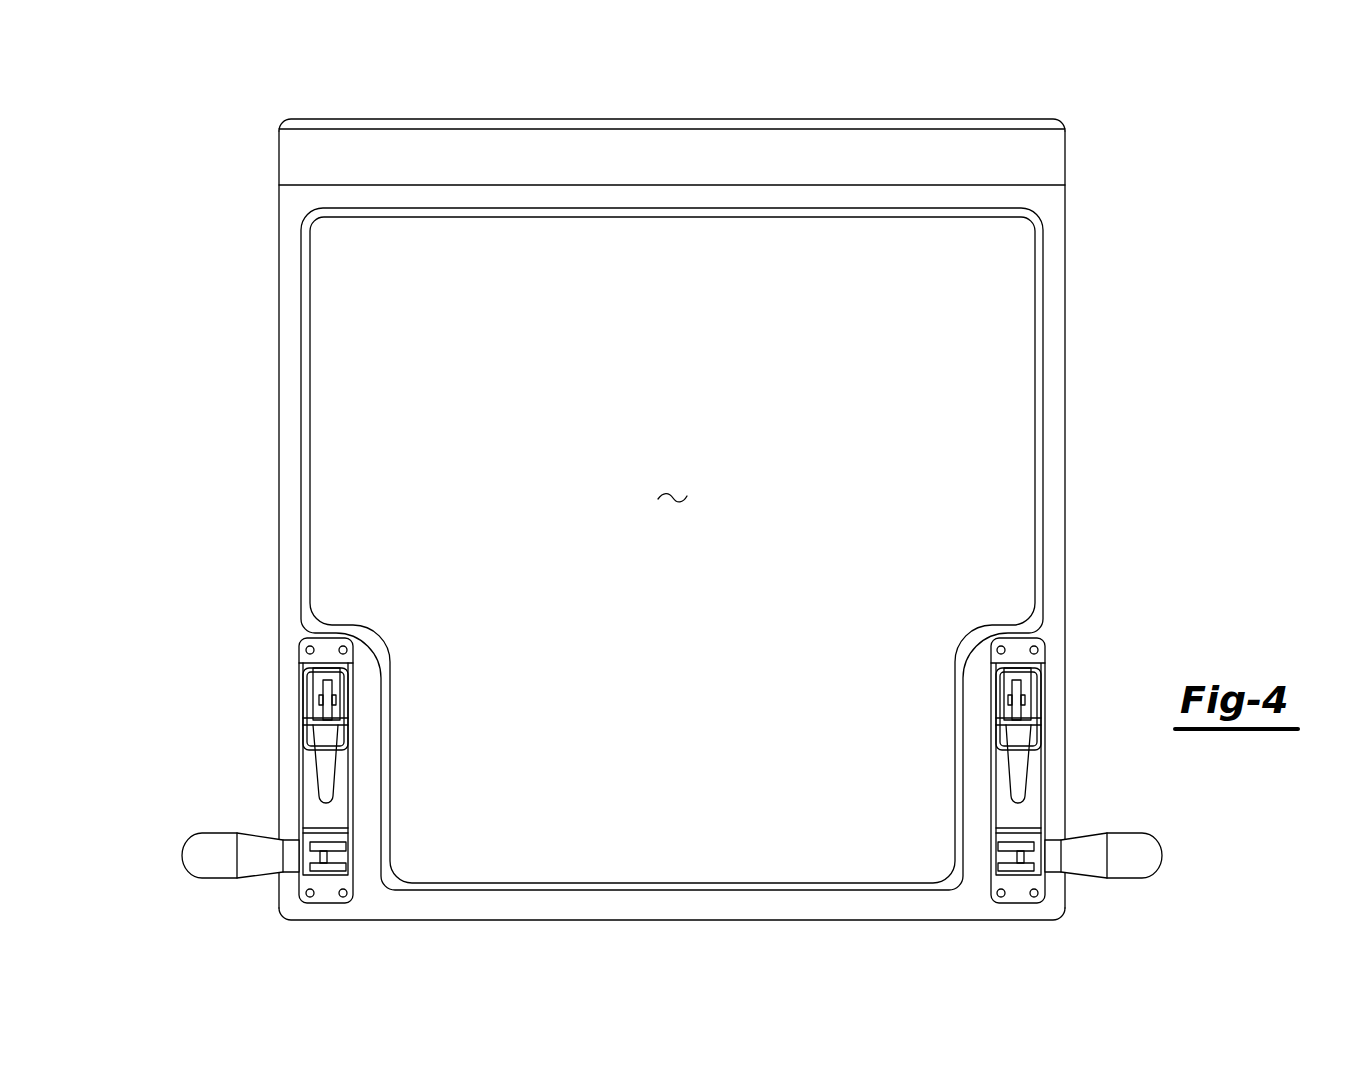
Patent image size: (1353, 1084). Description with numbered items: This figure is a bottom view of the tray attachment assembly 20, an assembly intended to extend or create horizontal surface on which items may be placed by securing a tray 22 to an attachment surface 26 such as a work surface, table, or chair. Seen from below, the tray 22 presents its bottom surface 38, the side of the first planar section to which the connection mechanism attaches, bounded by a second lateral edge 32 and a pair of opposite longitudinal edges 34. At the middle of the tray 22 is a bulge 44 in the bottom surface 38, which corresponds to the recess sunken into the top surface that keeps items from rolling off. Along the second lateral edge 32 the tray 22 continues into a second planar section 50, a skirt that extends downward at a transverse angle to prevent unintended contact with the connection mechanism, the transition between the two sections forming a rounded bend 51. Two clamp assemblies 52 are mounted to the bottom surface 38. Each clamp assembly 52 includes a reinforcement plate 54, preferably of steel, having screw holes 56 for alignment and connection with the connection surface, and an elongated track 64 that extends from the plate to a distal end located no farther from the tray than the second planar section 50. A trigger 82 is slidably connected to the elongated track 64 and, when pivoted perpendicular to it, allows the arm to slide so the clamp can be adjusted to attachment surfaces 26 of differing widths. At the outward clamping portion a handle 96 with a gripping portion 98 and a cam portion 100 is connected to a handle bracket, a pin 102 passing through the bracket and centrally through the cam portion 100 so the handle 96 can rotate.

The tray attachment assembly 20 is at (168, 323).
The tray 22 is at (572, 368).
The attachment surface 26 is at (420, 728).
The second lateral edge 32 is at (1033, 169).
The longitudinal edges 34 is at (279, 484).
The bottom surface 38 is at (697, 672).
The bulge 44 is at (672, 481).
The second planar section 50 is at (1045, 123).
The bend 51 is at (327, 156).
The clamp assembly 52 is at (288, 768).
The reinforcement plate 54 is at (323, 646).
The screw holes 56 is at (345, 648).
The elongated track 64 is at (332, 686).
The trigger 82 is at (325, 765).
The handle 96 is at (219, 822).
The gripping portion 98 is at (195, 865).
The cam portion 100 is at (335, 842).
The pin 102 is at (330, 856).